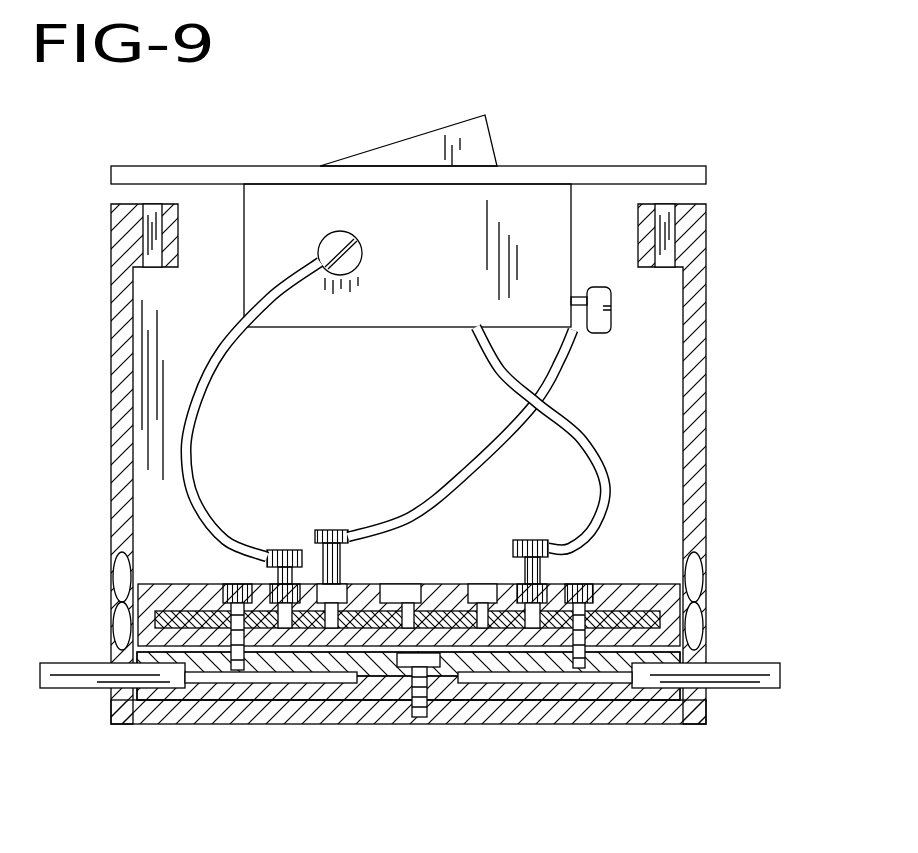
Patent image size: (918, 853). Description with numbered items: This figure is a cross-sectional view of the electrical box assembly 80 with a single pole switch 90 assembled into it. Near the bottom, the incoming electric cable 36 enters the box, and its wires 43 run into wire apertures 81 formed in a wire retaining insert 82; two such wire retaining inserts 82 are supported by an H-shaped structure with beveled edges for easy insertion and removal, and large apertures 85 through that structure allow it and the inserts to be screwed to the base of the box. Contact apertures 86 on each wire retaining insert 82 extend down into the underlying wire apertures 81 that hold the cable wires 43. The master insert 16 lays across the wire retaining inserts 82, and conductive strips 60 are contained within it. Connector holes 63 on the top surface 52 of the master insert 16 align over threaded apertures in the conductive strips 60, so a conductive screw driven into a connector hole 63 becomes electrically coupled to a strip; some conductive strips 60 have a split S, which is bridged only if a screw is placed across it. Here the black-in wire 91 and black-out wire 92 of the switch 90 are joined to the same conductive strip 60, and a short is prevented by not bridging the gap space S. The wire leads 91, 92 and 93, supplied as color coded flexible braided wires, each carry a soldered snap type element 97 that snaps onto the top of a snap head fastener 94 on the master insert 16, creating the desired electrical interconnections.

The single pole switch 90 is at (555, 160).
The electrical box assembly 80 is at (724, 290).
The master insert 16 is at (150, 591).
The black-in wire 91 is at (217, 373).
The black-out wire 92 is at (585, 427).
The wire lead 93 is at (458, 478).
The snap head fastener 94 is at (315, 543).
The snap type element 97 is at (284, 550).
The connector hole 63 is at (480, 584).
The split S is at (378, 585).
The top surface 52 is at (620, 584).
The conductive strip 60 is at (677, 610).
The electric cable 36 is at (75, 673).
The wire aperture 81 is at (225, 675).
The wire 43 is at (283, 702).
The wire retaining insert 82 is at (363, 702).
The large aperture 85 is at (448, 663).
The contact aperture 86 is at (560, 695).